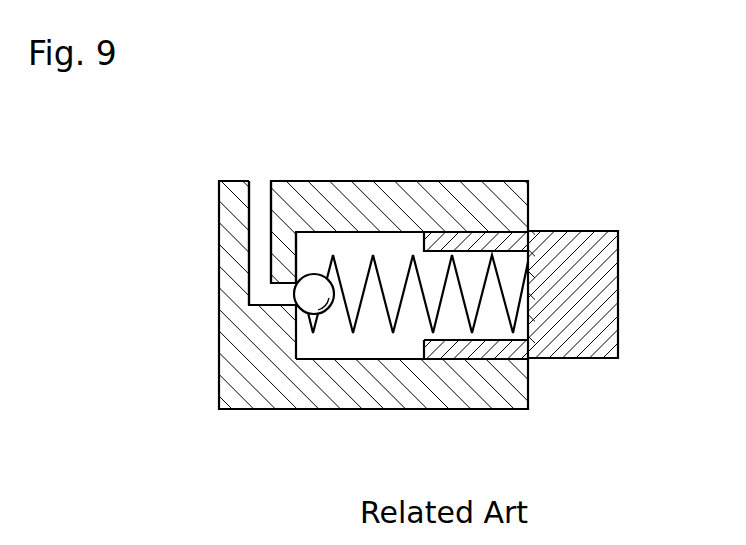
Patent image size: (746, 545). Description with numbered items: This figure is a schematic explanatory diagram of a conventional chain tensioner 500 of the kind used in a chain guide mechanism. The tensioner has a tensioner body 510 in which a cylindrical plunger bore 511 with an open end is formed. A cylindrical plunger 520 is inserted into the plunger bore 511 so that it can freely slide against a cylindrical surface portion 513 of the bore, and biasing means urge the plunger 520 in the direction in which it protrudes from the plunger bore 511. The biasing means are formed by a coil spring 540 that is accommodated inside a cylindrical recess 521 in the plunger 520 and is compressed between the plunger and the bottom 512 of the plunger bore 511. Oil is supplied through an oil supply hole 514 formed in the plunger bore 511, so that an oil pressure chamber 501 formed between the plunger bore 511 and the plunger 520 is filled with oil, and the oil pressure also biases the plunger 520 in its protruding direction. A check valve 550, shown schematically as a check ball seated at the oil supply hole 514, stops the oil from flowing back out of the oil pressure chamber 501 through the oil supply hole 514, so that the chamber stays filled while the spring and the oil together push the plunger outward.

The chain tensioner 500 is at (620, 107).
The oil pressure chamber 501 is at (385, 332).
The tensioner body 510 is at (322, 388).
The plunger bore 511 is at (416, 130).
The bottom 512 is at (297, 250).
The cylindrical surface portion 513 is at (391, 237).
The oil supply hole 514 is at (260, 181).
The plunger 520 is at (524, 239).
The cylindrical recess 521 is at (479, 255).
The coil spring 540 is at (480, 307).
The check valve 550 is at (293, 296).